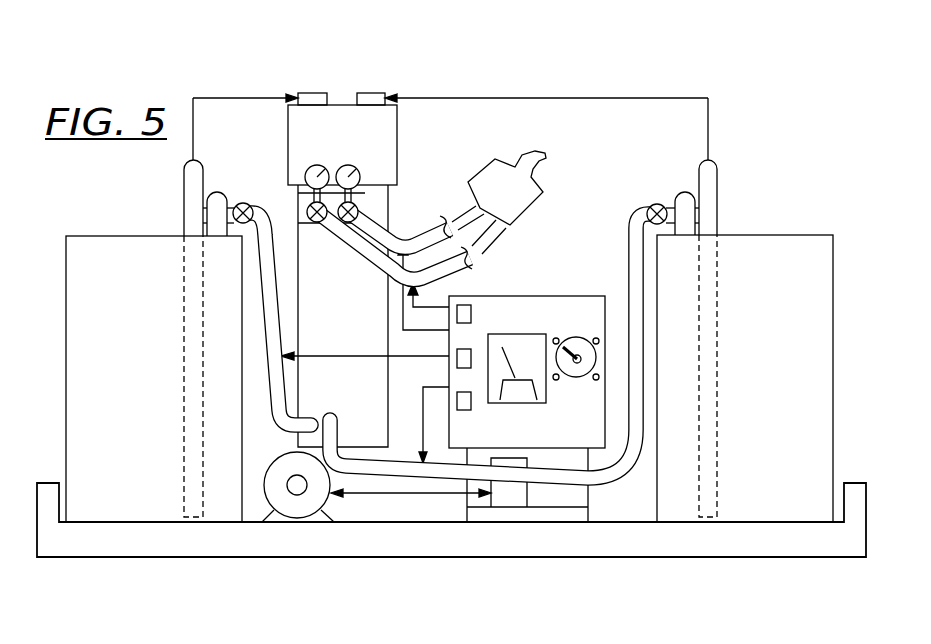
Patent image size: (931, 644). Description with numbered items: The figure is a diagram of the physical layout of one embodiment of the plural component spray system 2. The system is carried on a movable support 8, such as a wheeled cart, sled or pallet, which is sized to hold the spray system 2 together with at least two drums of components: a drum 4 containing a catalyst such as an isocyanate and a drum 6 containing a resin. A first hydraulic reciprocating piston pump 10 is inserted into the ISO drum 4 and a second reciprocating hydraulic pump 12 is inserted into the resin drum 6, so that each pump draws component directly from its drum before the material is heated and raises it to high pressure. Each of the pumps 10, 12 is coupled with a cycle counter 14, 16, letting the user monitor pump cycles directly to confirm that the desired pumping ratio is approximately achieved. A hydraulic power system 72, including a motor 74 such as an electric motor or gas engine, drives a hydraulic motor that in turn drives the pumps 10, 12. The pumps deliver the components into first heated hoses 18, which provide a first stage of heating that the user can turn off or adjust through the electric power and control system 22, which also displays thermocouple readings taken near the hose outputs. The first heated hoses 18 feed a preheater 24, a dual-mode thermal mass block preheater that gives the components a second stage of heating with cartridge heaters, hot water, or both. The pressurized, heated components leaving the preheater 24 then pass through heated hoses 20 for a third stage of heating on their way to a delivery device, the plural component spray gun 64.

The plural component spray system 2 is at (539, 77).
The drum 4 is at (785, 358).
The drum 6 is at (121, 368).
The movable support 8 is at (795, 548).
The first hydraulic reciprocating piston pump 10 is at (719, 184).
The second reciprocating hydraulic pump 12 is at (184, 186).
The cycle counter 14 is at (372, 92).
The cycle counter 16 is at (309, 92).
The first heated hoses 18 is at (258, 206).
The heated hoses 20 is at (412, 232).
The electric power and control system 22 is at (566, 435).
The preheater 24 is at (349, 323).
The plural component spray gun 64 is at (487, 164).
The hydraulic power system 72 is at (512, 500).
The motor 74 is at (295, 512).